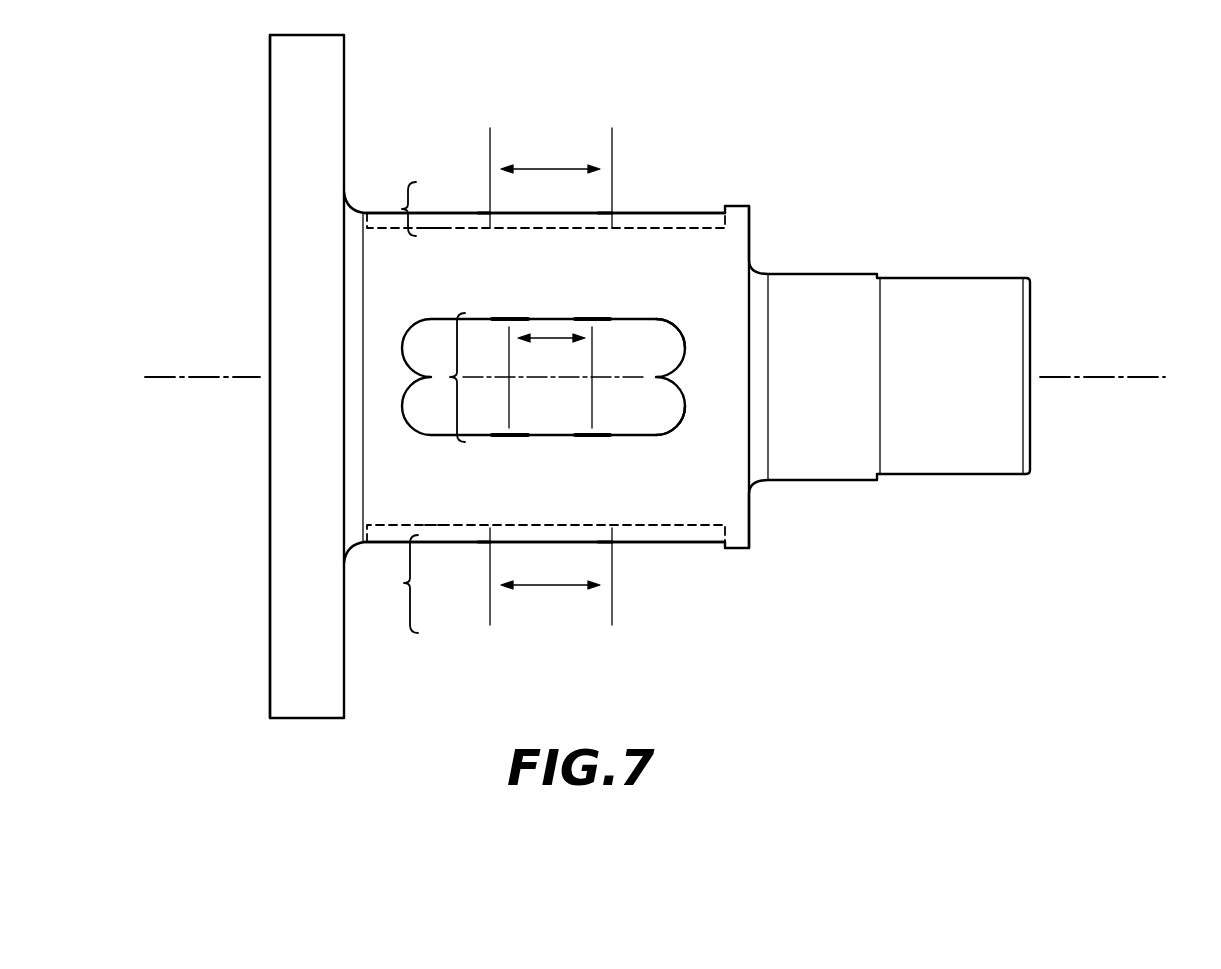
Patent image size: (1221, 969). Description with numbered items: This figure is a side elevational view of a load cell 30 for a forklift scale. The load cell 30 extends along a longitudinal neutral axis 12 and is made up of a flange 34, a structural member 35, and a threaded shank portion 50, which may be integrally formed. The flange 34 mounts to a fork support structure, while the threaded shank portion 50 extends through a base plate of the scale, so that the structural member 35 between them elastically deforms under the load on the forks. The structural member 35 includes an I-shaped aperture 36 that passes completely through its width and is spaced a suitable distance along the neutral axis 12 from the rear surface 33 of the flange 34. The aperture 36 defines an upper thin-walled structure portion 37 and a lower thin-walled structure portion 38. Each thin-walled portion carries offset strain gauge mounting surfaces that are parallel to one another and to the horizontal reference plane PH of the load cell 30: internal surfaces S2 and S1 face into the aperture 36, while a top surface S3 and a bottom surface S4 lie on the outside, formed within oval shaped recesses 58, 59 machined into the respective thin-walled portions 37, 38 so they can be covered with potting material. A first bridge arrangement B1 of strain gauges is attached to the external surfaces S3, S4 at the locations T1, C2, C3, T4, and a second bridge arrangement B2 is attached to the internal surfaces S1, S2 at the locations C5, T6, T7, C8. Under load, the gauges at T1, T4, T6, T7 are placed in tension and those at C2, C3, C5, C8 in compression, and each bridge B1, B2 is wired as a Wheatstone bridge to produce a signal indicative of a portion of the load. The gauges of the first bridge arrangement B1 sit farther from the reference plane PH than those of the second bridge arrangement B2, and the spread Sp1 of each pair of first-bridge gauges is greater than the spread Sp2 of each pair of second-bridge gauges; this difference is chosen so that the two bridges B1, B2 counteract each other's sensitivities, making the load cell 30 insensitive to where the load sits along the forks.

The load cell 30 is at (903, 168).
The rear surface 33 is at (270, 192).
The flange 34 is at (300, 115).
The structural member 35 is at (741, 214).
The aperture 36 is at (535, 410).
The upper thin-walled structure portion 37 is at (598, 278).
The lower thin-walled structure portion 38 is at (625, 480).
The threaded shank portion 50 is at (1018, 317).
The oval shaped recess 58 is at (643, 210).
The oval shaped recess 59 is at (633, 548).
The neutral axis 12 is at (1150, 378).
The horizontal reference plane PH is at (1102, 378).
The first bridge arrangement B1 is at (392, 405).
The second bridge arrangement B2 is at (450, 377).
The spread Sp1 is at (551, 376).
The spread Sp2 is at (550, 377).
The strain gauge location T1 is at (483, 225).
The strain gauge location C2 is at (603, 225).
The strain gauge location C3 is at (483, 530).
The strain gauge location T4 is at (603, 530).
The strain gauge location C5 is at (505, 322).
The strain gauge location T6 is at (598, 322).
The strain gauge location T7 is at (505, 432).
The strain gauge location C8 is at (598, 432).
The strain gauge mounting surface S1 is at (650, 429).
The strain gauge mounting surface S2 is at (650, 325).
The top surface S3 is at (428, 230).
The bottom surface S4 is at (428, 520).